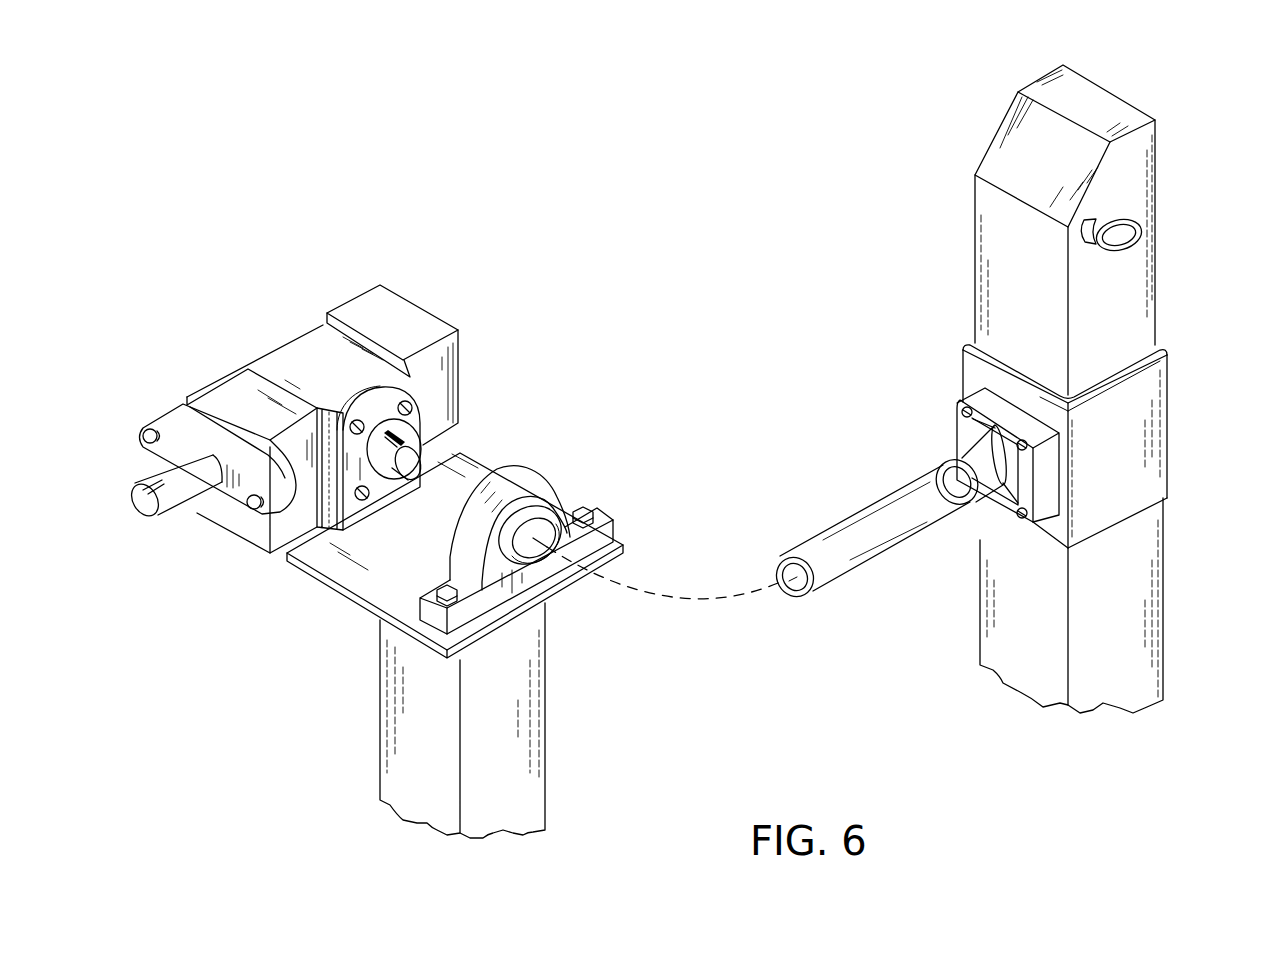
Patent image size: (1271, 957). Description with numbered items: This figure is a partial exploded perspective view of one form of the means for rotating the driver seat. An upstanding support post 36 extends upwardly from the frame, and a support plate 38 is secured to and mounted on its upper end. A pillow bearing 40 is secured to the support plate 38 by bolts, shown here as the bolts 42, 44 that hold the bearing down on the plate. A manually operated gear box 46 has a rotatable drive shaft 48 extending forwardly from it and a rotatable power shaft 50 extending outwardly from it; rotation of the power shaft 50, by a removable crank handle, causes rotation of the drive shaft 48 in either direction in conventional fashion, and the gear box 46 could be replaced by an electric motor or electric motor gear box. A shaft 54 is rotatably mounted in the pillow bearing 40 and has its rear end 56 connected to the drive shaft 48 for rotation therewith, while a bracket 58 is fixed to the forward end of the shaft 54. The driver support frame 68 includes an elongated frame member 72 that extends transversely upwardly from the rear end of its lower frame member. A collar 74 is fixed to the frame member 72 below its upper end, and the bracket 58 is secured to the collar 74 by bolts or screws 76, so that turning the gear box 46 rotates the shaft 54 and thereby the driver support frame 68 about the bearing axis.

The support post 36 is at (508, 752).
The support plate 38 is at (373, 587).
The pillow bearing 40 is at (527, 470).
The bolt 42 is at (442, 600).
The bolt 44 is at (583, 506).
The gear box 46 is at (273, 345).
The drive shaft 48 is at (410, 450).
The power shaft 50 is at (187, 495).
The shaft 54 is at (855, 513).
The rear end 56 is at (790, 597).
The bracket 58 is at (1012, 512).
The driver support frame 68 is at (1203, 350).
The frame member 72 is at (1132, 600).
The collar 74 is at (1120, 458).
The bolts or screws 76 is at (1025, 522).